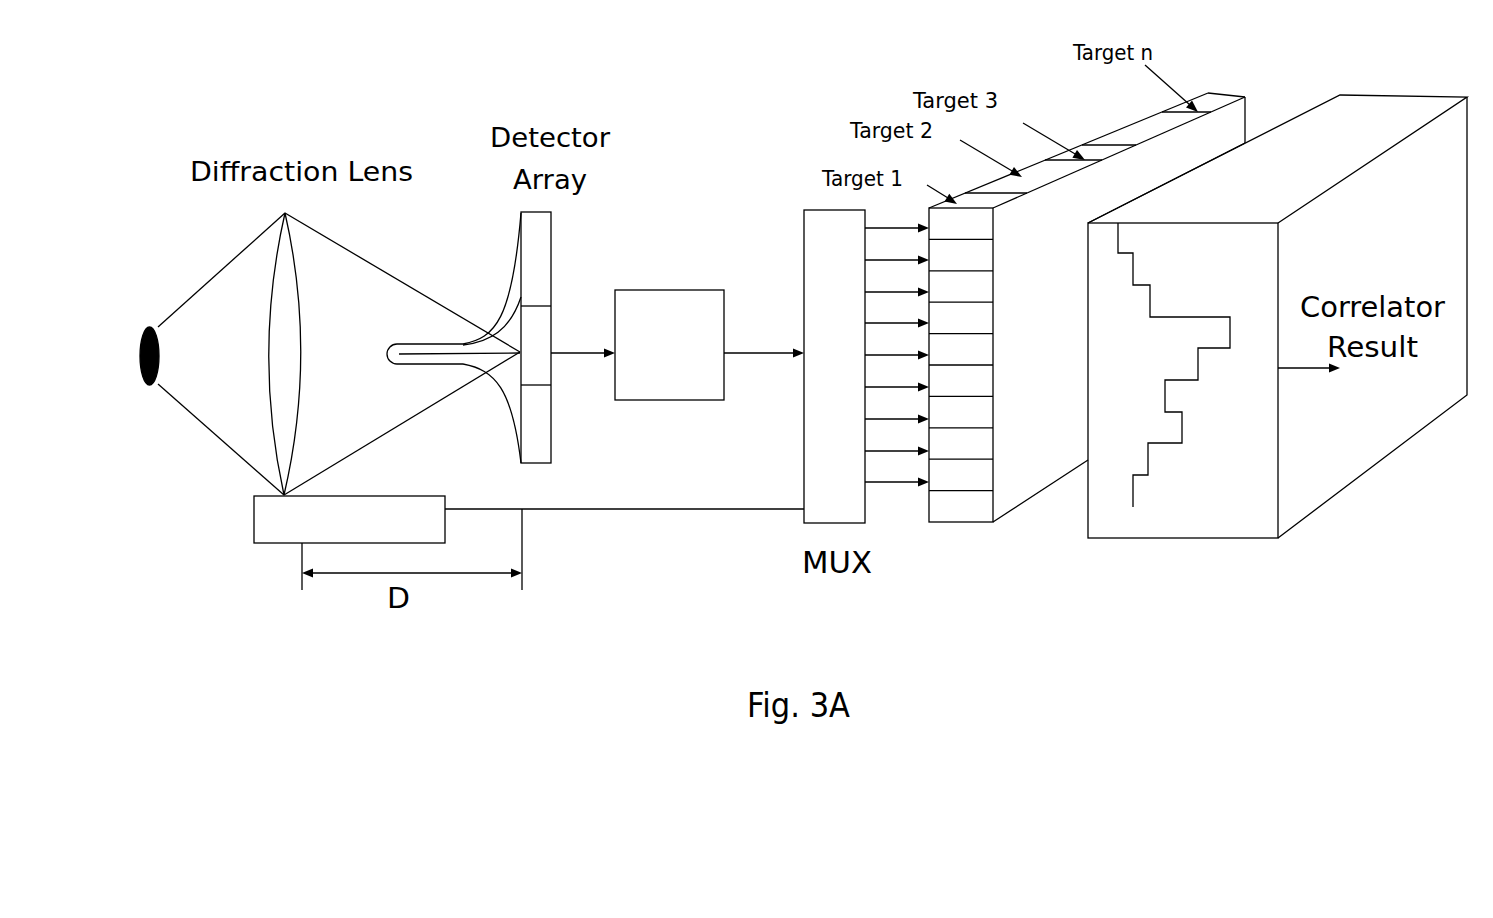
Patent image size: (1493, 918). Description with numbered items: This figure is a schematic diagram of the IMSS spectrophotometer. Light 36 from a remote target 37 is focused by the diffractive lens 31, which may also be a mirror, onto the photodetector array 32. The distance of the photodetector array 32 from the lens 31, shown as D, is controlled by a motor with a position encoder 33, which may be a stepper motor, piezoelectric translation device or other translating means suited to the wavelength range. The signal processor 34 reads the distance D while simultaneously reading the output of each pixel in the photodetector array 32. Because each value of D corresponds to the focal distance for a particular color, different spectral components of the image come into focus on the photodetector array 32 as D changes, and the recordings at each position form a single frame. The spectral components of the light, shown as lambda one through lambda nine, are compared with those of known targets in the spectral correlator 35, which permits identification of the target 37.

The diffractive lens 31 is at (283, 260).
The photodetector array 32 is at (552, 240).
The motor with position encoder 33 is at (333, 543).
The signal processor 34 is at (660, 401).
The spectral correlator 35 is at (1167, 540).
The light 36 is at (435, 338).
The remote target 37 is at (127, 351).